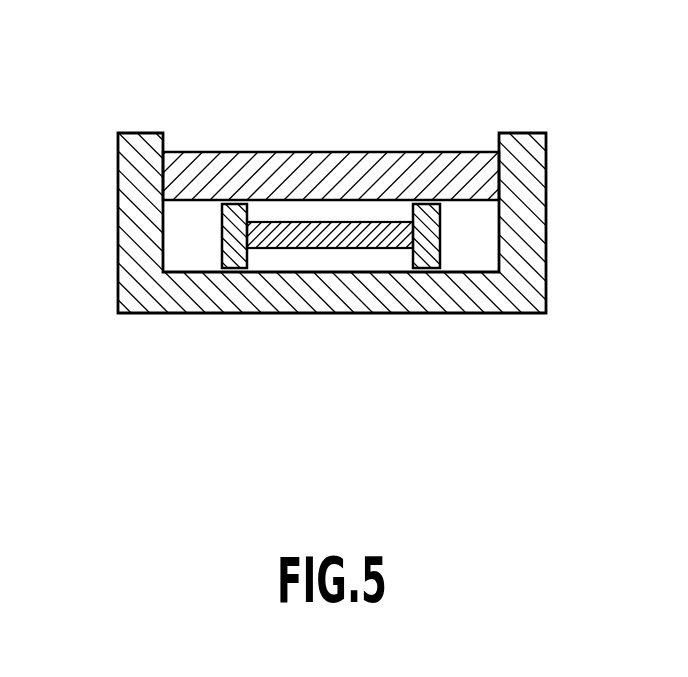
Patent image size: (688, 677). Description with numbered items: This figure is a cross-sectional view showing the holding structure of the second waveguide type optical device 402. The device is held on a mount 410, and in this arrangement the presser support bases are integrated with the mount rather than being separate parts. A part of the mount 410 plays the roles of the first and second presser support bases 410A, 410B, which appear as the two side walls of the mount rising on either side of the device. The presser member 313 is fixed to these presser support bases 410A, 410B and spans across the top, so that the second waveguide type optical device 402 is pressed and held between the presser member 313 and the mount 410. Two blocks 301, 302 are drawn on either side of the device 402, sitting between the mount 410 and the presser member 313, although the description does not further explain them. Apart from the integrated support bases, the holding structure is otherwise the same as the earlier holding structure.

The mount 410 is at (320, 307).
The first presser support base 410A is at (126, 219).
The second presser support base 410B is at (532, 217).
The presser member 313 is at (255, 157).
The second waveguide type optical device 402 is at (338, 223).
The first support block 301 is at (235, 267).
The second support block 302 is at (427, 267).